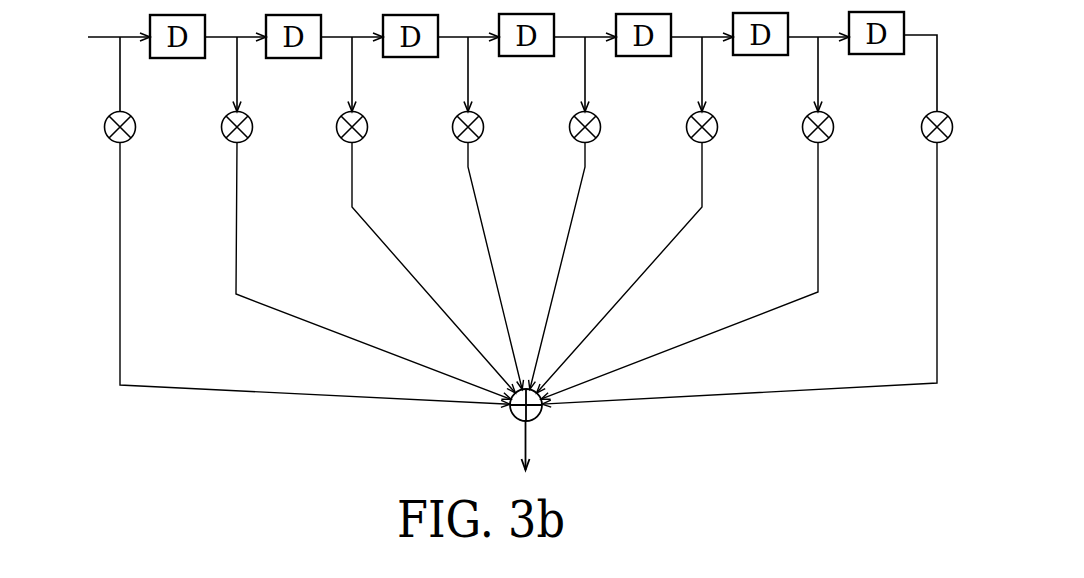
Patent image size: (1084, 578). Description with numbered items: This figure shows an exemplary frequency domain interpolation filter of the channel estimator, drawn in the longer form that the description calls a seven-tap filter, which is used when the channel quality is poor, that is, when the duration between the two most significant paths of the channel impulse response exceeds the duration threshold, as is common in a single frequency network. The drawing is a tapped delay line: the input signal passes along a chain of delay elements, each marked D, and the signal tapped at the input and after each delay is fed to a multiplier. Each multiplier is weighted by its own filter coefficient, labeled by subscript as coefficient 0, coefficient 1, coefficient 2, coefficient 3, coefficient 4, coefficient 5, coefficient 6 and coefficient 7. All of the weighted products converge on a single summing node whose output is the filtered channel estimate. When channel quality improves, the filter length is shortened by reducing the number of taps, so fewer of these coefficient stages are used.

The multiplier for filter coefficient a0 0 is at (104, 127).
The multiplier for filter coefficient a1 1 is at (222, 127).
The multiplier for filter coefficient a2 2 is at (336, 127).
The multiplier for filter coefficient a3 3 is at (452, 127).
The multiplier for filter coefficient a4 4 is at (570, 127).
The multiplier for filter coefficient a5 5 is at (686, 127).
The multiplier for filter coefficient a6 6 is at (802, 127).
The multiplier for filter coefficient a7 7 is at (922, 127).